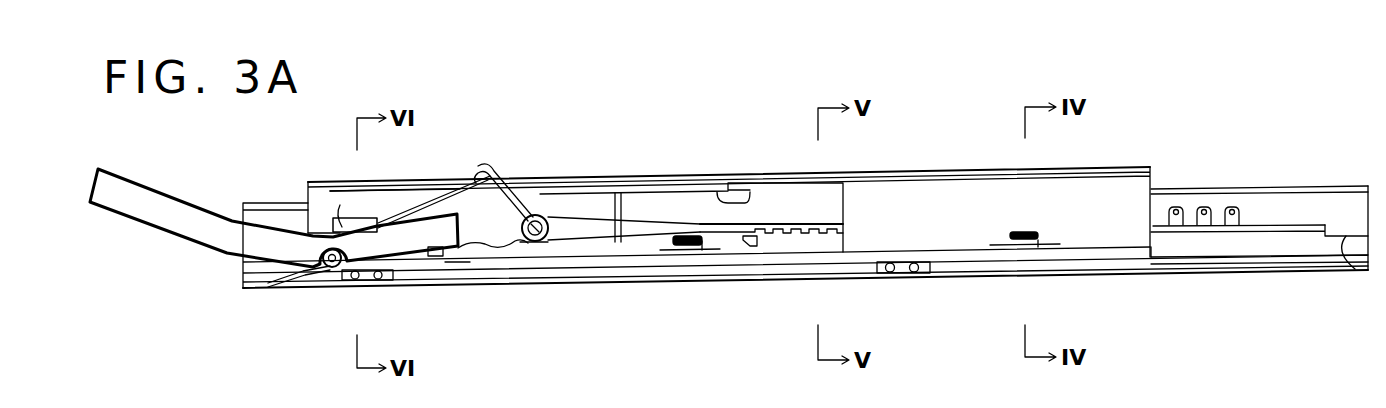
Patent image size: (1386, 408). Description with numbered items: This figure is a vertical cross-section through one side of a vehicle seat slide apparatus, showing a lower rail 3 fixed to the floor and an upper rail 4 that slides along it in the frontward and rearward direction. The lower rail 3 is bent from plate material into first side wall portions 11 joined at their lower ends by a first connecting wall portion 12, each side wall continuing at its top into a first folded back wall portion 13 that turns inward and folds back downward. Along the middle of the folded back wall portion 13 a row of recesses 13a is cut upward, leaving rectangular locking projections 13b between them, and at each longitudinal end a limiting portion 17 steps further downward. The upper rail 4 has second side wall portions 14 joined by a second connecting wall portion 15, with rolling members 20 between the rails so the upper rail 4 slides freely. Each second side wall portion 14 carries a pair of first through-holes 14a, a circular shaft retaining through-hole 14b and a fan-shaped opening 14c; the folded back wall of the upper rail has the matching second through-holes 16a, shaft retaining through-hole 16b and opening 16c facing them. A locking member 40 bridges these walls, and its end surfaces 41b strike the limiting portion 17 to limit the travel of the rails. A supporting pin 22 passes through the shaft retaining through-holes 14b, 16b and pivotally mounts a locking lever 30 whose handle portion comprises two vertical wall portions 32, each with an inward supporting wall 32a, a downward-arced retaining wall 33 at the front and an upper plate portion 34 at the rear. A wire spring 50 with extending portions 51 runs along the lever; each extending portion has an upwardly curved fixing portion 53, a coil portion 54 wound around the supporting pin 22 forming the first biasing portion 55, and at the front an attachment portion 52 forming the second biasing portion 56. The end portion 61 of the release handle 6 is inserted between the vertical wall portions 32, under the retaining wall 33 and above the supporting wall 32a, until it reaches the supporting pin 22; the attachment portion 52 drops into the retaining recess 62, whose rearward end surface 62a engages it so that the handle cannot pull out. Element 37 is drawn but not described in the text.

The lower rail 3 is at (295, 289).
The upper rail 4 is at (412, 182).
The release handle 6 is at (274, 207).
The first side wall portion 11 is at (1307, 250).
The first connecting wall portion 12 is at (1255, 270).
The first folded back wall portion 13 is at (1300, 188).
The recess 13a is at (1232, 207).
The locking projection 13b is at (1222, 227).
The second side wall portion 14 is at (1117, 240).
The first through-hole 14a is at (687, 247).
The shaft retaining through-hole 14b is at (532, 243).
The opening 14c is at (748, 247).
The second connecting wall portion 15 is at (1100, 167).
The second through-hole 16a is at (857, 306).
The shaft retaining through-hole 16b is at (520, 305).
The opening 16c is at (764, 298).
The limiting portion 17 is at (1355, 269).
The rolling member 20 is at (375, 282).
The supporting pin 22 is at (548, 238).
The locking lever 30 is at (540, 200).
The vertical wall portion 32 is at (487, 252).
The supporting wall 32a is at (452, 277).
The retaining wall 33 is at (342, 227).
The upper plate portion 34 is at (780, 180).
The latch strip 37 is at (845, 231).
The locking member 40 is at (1024, 232).
The end surface 41b is at (1040, 237).
The wire spring 50 is at (568, 212).
The extending portion 51 is at (638, 220).
The attachment portion 52 is at (334, 270).
The fixing portion 53 is at (490, 166).
The coil portion 54 is at (540, 242).
The first biasing portion 55 is at (720, 203).
The second biasing portion 56 is at (432, 200).
The end portion 61 is at (164, 194).
The retaining recess 62 is at (283, 285).
The rearward end surface 62a is at (325, 234).